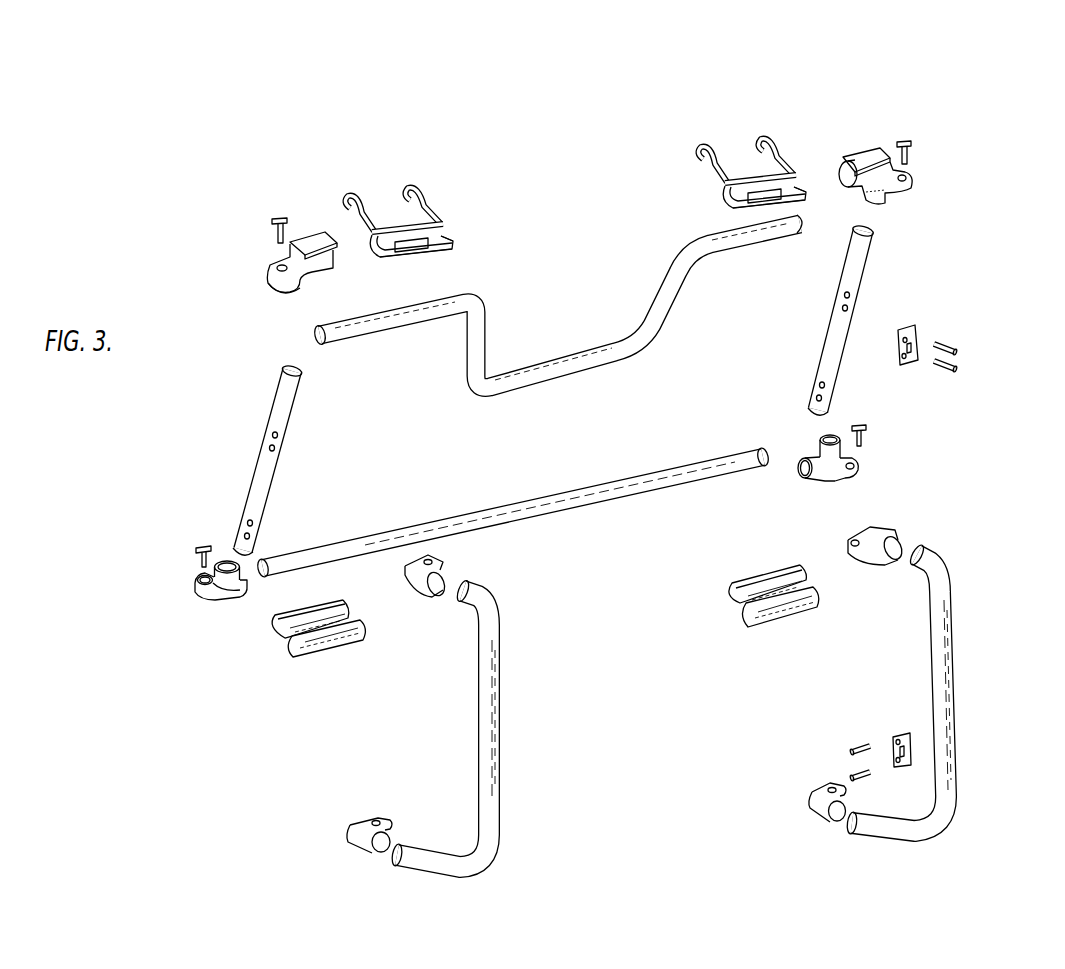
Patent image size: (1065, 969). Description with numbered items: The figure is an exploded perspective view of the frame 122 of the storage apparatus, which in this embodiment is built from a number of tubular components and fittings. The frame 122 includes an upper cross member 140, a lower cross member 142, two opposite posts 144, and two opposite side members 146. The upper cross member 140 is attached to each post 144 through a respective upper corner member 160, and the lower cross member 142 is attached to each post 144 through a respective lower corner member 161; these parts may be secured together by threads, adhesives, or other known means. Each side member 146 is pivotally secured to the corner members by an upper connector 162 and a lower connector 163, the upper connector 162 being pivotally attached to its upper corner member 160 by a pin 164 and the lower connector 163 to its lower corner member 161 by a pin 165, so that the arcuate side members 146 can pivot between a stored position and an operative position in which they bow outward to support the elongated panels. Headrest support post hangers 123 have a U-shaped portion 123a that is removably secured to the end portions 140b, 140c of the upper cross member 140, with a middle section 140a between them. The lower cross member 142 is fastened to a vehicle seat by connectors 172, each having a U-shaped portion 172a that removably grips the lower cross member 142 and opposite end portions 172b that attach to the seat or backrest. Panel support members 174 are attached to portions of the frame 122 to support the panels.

The frame 122 is at (793, 88).
The headrest support post hanger 123 is at (420, 190).
The U-shaped portion 123a is at (444, 238).
The upper cross member 140 is at (557, 307).
The handlebar middle section 140a is at (550, 370).
The end portion 140b is at (396, 318).
The end portion 140c is at (760, 245).
The lower cross member 142 is at (547, 517).
The post 144 is at (273, 405).
The side member 146 is at (500, 715).
The upper corner member 160 is at (306, 238).
The lower corner member 161 is at (224, 600).
The upper connector 162 is at (418, 578).
The lower connector 163 is at (363, 830).
The pin 164 is at (270, 232).
The pin 165 is at (198, 561).
The connector 172 is at (571, 610).
The U-shaped portion 172a is at (340, 612).
The end portion 172b is at (350, 640).
The panel support member 174 is at (918, 333).